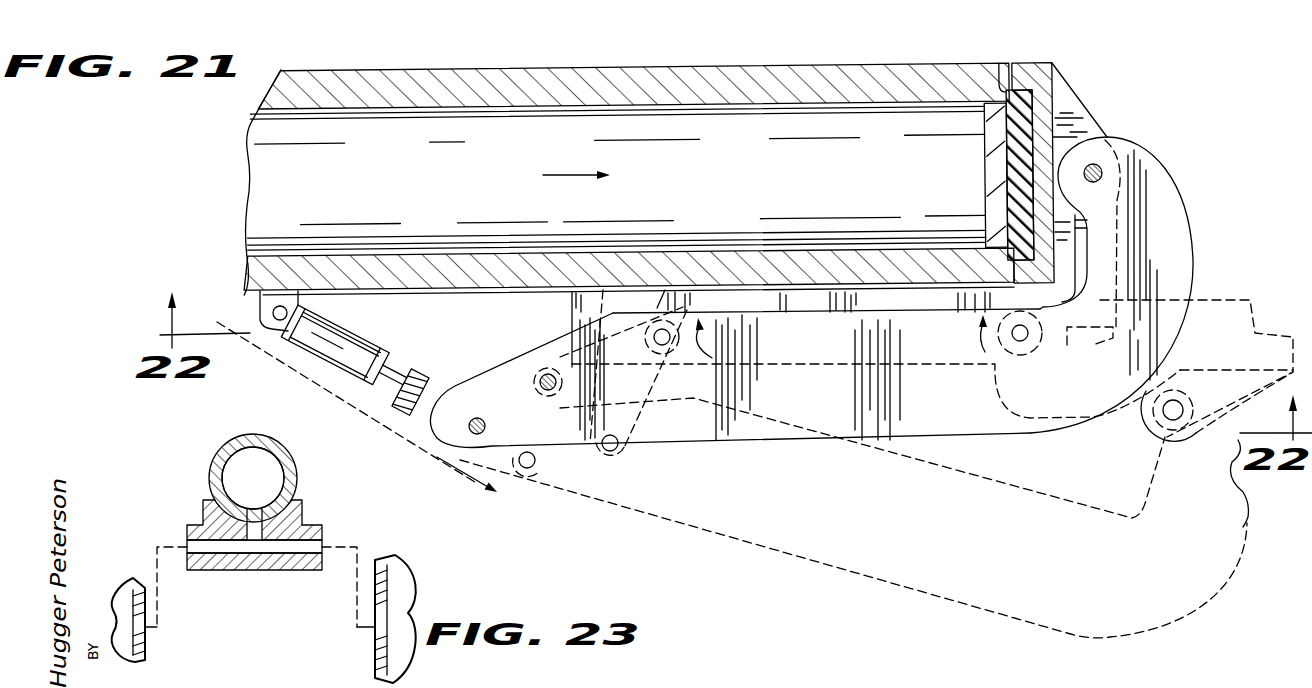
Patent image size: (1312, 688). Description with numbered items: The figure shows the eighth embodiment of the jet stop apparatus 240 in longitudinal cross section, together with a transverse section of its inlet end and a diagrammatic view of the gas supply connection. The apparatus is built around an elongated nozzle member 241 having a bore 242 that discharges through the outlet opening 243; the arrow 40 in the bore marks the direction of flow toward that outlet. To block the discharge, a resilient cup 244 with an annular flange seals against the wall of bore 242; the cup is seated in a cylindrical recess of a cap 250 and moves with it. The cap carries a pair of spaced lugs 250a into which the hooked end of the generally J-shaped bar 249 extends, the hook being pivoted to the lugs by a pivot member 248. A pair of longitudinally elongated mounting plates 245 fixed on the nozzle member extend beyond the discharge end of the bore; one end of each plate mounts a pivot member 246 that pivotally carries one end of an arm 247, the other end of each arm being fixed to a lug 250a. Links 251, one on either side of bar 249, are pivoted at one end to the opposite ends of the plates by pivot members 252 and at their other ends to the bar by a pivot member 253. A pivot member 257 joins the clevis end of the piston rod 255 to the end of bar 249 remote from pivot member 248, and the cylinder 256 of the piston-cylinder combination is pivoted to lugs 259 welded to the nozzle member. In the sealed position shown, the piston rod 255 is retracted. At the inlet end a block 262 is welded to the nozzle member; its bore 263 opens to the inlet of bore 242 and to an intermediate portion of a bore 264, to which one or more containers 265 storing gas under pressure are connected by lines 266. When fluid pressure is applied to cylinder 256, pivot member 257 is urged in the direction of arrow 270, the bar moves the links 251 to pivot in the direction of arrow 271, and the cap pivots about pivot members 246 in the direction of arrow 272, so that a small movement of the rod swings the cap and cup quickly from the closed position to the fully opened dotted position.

In FIG. 21, the direction of movement arrow 40 is at (570, 178).
In FIG. 21, the jet stop apparatus 240 is at (238, 148).
In FIG. 21, the nozzle member 241 is at (365, 98).
In FIG. 23, the nozzle member 241 is at (213, 460).
In FIG. 21, the bore 242 is at (487, 98).
In FIG. 23, the bore 242 is at (263, 434).
In FIG. 21, the outlet opening 243 is at (1002, 70).
In FIG. 21, the resilient cup 244 is at (1053, 64).
In FIG. 21, the mounting plates 245 is at (665, 290).
In FIG. 21, the pivot member 246 is at (1019, 348).
In FIG. 21, the arms 247 is at (1080, 262).
In FIG. 21, the pivot member 248 is at (1103, 173).
In FIG. 21, the J-shaped bar 249 is at (913, 436).
In FIG. 21, the cap 250 is at (1045, 97).
In FIG. 21, the lugs 250a is at (1067, 131).
In FIG. 21, the links 251 is at (605, 290).
In FIG. 21, the pivot member 252 is at (672, 322).
In FIG. 21, the pivot member 253 is at (544, 372).
In FIG. 21, the piston rod 255 is at (400, 370).
In FIG. 21, the cylinder 256 is at (353, 338).
In FIG. 21, the pivot member 257 is at (497, 397).
In FIG. 21, the lugs 259 is at (276, 290).
In FIG. 23, the block 262 is at (302, 512).
In FIG. 23, the bore 263 is at (240, 540).
In FIG. 23, the bore 264 is at (287, 570).
In FIG. 23, the containers 265 is at (125, 577).
In FIG. 23, the lines 266 is at (157, 603).
In FIG. 21, the arrow 270 is at (450, 485).
In FIG. 21, the arrow 271 is at (708, 342).
In FIG. 21, the arrow 272 is at (978, 333).